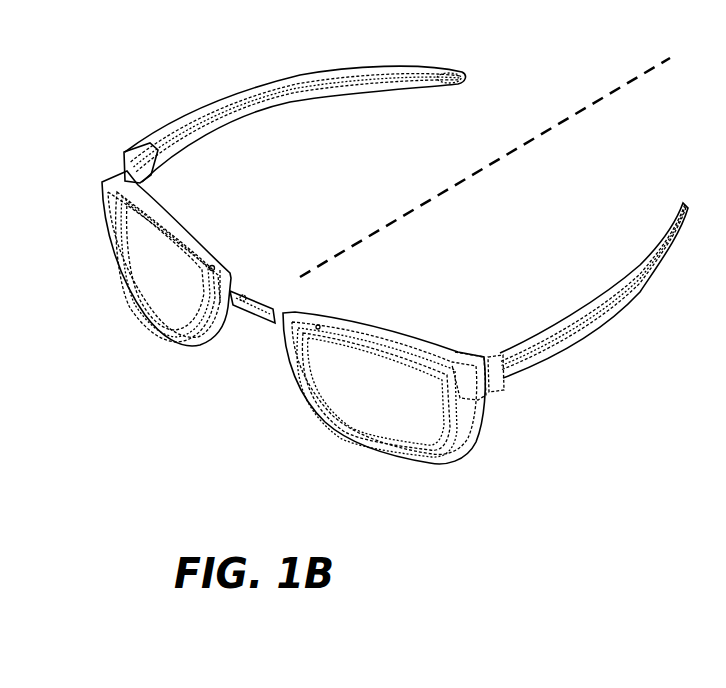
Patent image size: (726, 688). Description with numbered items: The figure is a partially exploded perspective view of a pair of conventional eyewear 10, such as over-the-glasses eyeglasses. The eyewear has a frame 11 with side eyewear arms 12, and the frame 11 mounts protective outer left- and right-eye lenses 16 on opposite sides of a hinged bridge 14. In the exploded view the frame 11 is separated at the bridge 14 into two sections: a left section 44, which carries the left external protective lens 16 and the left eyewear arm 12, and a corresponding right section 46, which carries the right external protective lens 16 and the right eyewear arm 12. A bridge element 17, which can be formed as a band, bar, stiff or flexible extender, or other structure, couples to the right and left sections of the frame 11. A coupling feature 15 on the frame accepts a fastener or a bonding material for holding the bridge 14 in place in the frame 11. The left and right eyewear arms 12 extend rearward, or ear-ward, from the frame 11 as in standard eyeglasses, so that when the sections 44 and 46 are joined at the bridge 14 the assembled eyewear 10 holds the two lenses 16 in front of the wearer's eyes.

The eyewear 10 is at (395, 253).
The frame 11 is at (483, 440).
The eyewear arm 12 is at (281, 99).
The hinged bridge 14 is at (312, 301).
The coupling feature 15 is at (215, 268).
The protective outer lens 16 is at (183, 287).
The bridge element 17 is at (257, 320).
The left section 44 is at (570, 232).
The right section 46 is at (516, 46).